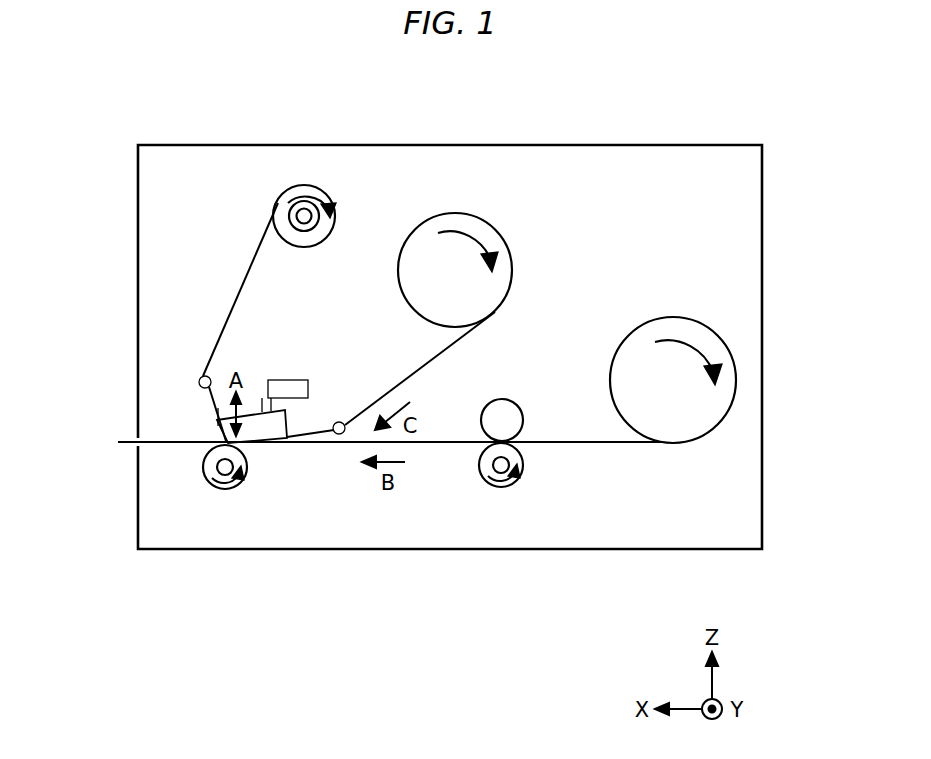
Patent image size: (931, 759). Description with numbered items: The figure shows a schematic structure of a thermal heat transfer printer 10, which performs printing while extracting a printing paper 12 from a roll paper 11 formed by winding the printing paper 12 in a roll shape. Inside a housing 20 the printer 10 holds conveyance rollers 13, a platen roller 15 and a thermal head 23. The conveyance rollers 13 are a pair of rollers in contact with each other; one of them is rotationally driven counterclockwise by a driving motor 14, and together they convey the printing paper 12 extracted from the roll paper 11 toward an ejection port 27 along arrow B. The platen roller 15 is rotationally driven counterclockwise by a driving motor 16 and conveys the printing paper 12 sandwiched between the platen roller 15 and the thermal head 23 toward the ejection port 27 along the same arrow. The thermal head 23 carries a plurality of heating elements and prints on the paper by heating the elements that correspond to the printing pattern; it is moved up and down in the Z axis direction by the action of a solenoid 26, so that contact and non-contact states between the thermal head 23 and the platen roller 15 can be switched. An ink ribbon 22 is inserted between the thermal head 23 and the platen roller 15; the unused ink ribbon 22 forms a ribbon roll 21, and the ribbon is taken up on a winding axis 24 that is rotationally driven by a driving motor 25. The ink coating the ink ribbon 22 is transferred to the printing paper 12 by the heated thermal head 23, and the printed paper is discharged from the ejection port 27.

The thermal heat transfer printer 10 is at (598, 128).
The roll paper 11 is at (716, 335).
The printing paper 12 is at (608, 444).
The conveyance rollers 13 is at (524, 420).
The driving motor 14 is at (493, 467).
The platen roller 15 is at (220, 489).
The driving motor 16 is at (217, 468).
The housing 20 is at (763, 178).
The ribbon roll 21 is at (453, 213).
The ink ribbon 22 is at (420, 369).
The thermal head 23 is at (288, 424).
The winding axis 24 is at (339, 208).
The driving motor 25 is at (279, 198).
The solenoid 26 is at (286, 378).
The ejection port 27 is at (128, 430).